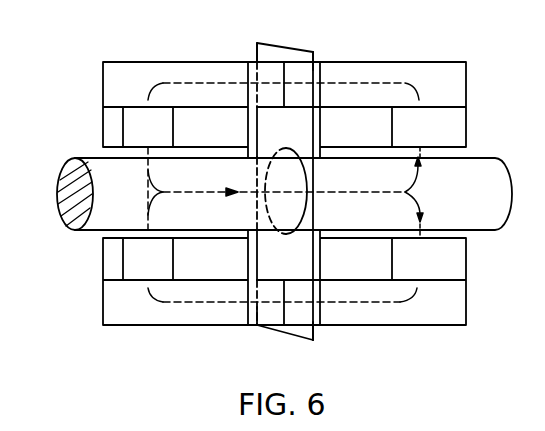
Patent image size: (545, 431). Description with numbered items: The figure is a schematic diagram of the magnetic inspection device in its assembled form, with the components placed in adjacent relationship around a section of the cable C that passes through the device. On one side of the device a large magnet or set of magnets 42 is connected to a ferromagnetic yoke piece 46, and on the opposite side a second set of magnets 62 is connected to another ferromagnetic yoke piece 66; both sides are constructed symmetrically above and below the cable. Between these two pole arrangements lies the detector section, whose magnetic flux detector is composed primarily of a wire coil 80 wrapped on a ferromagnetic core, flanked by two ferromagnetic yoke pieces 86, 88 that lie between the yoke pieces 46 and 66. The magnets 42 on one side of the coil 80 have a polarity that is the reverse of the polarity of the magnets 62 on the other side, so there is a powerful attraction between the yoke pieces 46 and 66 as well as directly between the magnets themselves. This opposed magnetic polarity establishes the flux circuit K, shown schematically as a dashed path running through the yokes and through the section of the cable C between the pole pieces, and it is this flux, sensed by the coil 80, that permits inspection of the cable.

The cable C is at (62, 174).
The magnets 42 is at (192, 118).
The yoke piece 46 is at (140, 68).
The magnets 62 is at (383, 111).
The yoke piece 66 is at (408, 67).
The wire coil 80 is at (288, 45).
The yoke piece 86 is at (318, 67).
The yoke piece 88 is at (252, 65).
The flux circuit K is at (402, 190).